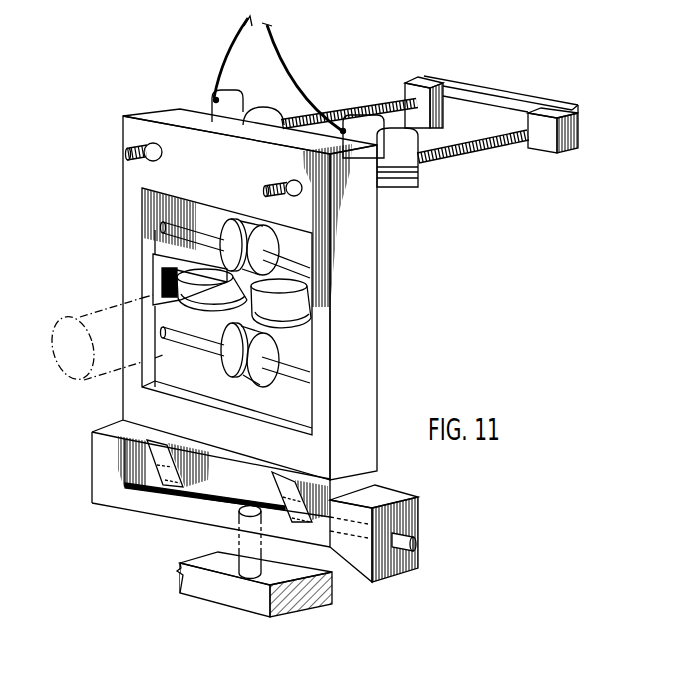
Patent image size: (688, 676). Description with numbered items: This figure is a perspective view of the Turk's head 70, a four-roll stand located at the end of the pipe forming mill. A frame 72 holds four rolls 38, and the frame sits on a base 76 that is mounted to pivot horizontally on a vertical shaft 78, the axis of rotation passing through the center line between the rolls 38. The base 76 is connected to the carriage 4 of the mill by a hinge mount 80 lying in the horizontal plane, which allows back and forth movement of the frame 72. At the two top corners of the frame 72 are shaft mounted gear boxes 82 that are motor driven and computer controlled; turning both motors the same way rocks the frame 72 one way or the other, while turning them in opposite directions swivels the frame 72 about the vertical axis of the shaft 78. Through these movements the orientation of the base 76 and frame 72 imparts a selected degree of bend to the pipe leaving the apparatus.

The Turk's head 70 is at (390, 304).
The frame 72 is at (362, 255).
The rolls 38 is at (292, 388).
The shaft mounted gear boxes 82 is at (395, 178).
The base 76 is at (408, 510).
The hinge mount 80 is at (414, 543).
The vertical shaft 78 is at (240, 562).
The carriage 4 is at (313, 613).